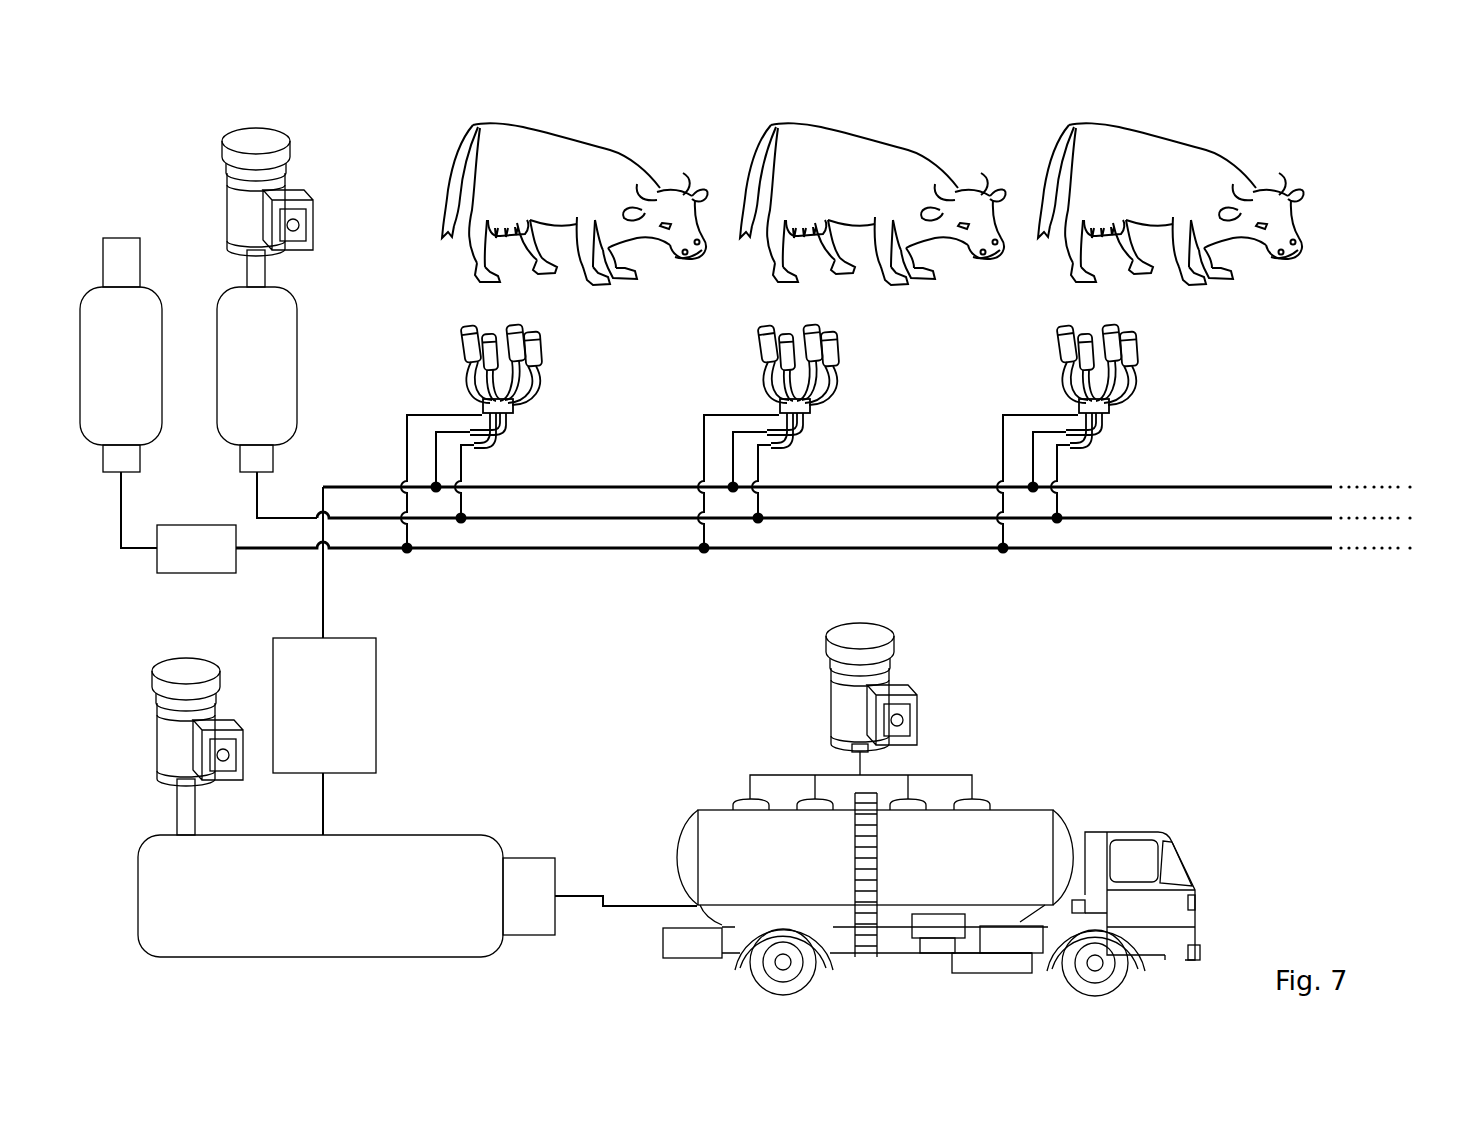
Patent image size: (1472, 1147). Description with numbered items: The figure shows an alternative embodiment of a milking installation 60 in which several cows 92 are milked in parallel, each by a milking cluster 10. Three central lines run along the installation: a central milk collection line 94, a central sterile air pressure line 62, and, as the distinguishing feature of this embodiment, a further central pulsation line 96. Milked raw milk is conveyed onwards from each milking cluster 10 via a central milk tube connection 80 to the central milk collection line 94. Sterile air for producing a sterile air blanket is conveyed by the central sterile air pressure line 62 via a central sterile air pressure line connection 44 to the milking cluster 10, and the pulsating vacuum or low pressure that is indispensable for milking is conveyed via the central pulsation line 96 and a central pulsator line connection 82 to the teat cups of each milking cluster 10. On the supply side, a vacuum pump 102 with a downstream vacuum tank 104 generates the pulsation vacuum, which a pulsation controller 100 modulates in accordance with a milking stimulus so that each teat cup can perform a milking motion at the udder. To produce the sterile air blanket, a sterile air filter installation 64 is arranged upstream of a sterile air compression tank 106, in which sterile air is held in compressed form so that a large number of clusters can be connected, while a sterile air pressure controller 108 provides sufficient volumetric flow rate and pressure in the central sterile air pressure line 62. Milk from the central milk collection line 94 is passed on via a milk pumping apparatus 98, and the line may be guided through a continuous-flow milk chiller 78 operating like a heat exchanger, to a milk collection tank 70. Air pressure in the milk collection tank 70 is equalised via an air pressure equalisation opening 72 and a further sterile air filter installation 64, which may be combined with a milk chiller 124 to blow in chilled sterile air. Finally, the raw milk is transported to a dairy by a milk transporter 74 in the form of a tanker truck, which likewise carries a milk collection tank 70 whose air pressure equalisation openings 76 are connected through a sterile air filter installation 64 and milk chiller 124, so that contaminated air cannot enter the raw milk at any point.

The milking installation 60 is at (1338, 211).
The sterile air filter installation 64 is at (256, 142).
The milk chiller 124 is at (185, 668).
The vacuum pump 102 is at (120, 248).
The vacuum tank 104 is at (103, 373).
The sterile air compression tank 106 is at (239, 373).
The sterile air pressure controller 108 is at (308, 234).
The pulsation controller 100 is at (178, 564).
The milk pumping apparatus 98 is at (324, 661).
The continuous-flow milk chiller 78 is at (293, 718).
The milk collection tank 70 is at (313, 909).
The air pressure equalisation opening 72 is at (190, 812).
The milk transporter 74 is at (1133, 828).
The air pressure equalisation opening 76 is at (965, 775).
The cow 92 is at (1167, 153).
The milking cluster 10 is at (1140, 352).
The central pulsator line connection 82 is at (1032, 413).
The central milk tube connection 80 is at (1033, 457).
The central sterile air pressure line connection 44 is at (1057, 462).
The central milk collection line 94 is at (1188, 486).
The central sterile air pressure line 62 is at (1123, 520).
The central pulsation line 96 is at (946, 550).